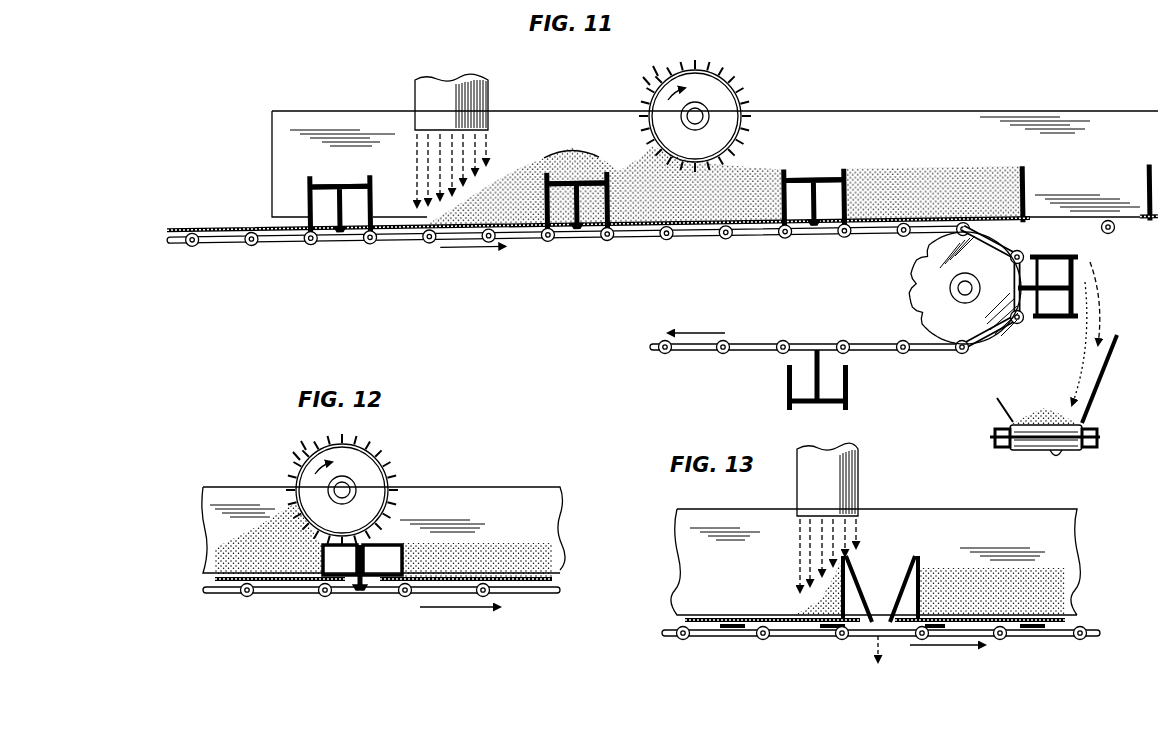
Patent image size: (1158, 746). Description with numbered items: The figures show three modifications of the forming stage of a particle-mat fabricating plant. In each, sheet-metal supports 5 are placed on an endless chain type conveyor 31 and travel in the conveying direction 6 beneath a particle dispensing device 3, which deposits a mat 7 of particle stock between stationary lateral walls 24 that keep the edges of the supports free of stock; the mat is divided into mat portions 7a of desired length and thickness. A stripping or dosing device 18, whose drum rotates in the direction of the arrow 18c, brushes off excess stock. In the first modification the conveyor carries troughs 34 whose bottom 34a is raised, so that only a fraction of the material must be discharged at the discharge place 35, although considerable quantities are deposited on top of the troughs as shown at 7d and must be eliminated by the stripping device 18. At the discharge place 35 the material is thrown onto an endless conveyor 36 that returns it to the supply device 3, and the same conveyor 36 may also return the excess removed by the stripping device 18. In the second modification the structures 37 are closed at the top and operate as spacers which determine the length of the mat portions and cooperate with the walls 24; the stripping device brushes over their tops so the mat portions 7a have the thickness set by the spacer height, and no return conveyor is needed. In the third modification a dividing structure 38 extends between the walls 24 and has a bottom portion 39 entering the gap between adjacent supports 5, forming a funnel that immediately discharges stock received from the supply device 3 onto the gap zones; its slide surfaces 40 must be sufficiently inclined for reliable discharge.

In FIG. 11, the particle dispensing device 3 is at (486, 95).
In FIG. 13, the particle dispensing device 3 is at (850, 467).
In FIG. 11, the sheet-metal supports 5 is at (222, 228).
In FIG. 12, the sheet-metal supports 5 is at (528, 590).
In FIG. 13, the sheet-metal supports 5 is at (708, 634).
In FIG. 11, the conveying direction 6 is at (466, 251).
In FIG. 12, the conveying direction 6 is at (452, 607).
In FIG. 13, the conveying direction 6 is at (938, 647).
In FIG. 11, the mat of particle stock 7 is at (500, 180).
In FIG. 12, the mat of particle stock 7 is at (226, 541).
In FIG. 11, the mat portion 7a is at (920, 183).
In FIG. 12, the mat portion 7a is at (490, 556).
In FIG. 13, the mat portion 7a is at (1028, 581).
In FIG. 11, the deposited stock on troughs 7d is at (560, 156).
In FIG. 11, the stripping or dosing device 18 is at (715, 87).
In FIG. 12, the stripping or dosing device 18 is at (375, 468).
In FIG. 11, the direction of drum rotation 18c is at (660, 88).
In FIG. 12, the direction of drum rotation 18c is at (305, 466).
In FIG. 11, the stationary walls 24 is at (1120, 113).
In FIG. 12, the stationary walls 24 is at (494, 487).
In FIG. 13, the stationary walls 24 is at (708, 519).
In FIG. 11, the conveyor 31 is at (212, 244).
In FIG. 12, the conveyor 31 is at (275, 594).
In FIG. 13, the conveyor 31 is at (788, 636).
In FIG. 11, the trough 34 is at (376, 198).
In FIG. 11, the trough bottom 34a is at (328, 186).
In FIG. 11, the discharge place 35 is at (1075, 301).
In FIG. 11, the endless conveyor 36 is at (1090, 430).
In FIG. 12, the spacer structures 37 is at (398, 545).
In FIG. 13, the dividing structure 38 is at (920, 560).
In FIG. 13, the bottom portion 39 is at (880, 636).
In FIG. 13, the slide surfaces 40 is at (908, 582).